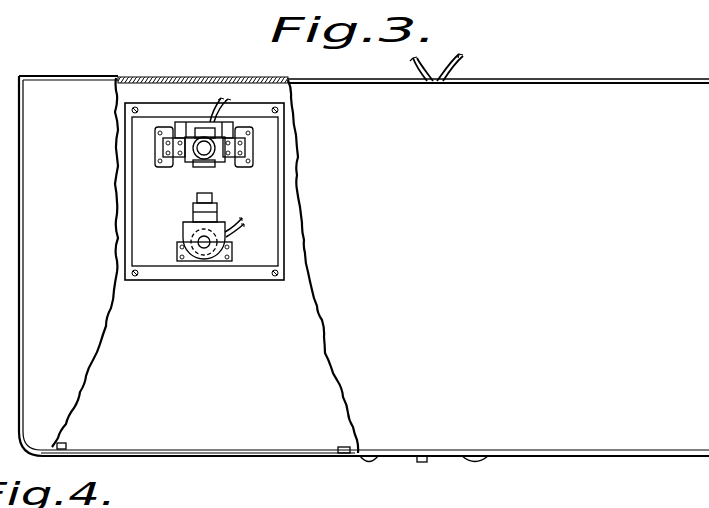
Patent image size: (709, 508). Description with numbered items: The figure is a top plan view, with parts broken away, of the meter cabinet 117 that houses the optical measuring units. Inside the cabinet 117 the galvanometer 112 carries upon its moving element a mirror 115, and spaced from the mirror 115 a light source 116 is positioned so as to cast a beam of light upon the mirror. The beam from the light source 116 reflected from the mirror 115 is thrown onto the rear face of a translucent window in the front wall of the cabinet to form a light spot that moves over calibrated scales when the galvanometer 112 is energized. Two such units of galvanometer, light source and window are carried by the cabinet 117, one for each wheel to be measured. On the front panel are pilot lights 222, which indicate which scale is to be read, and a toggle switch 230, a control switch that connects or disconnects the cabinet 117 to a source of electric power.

The galvanometer 112 is at (193, 123).
The mirror 115 is at (205, 167).
The light source 116 is at (196, 209).
The cabinet 117 is at (375, 479).
The pilot light 222 is at (371, 464).
The toggle switch 230 is at (422, 462).